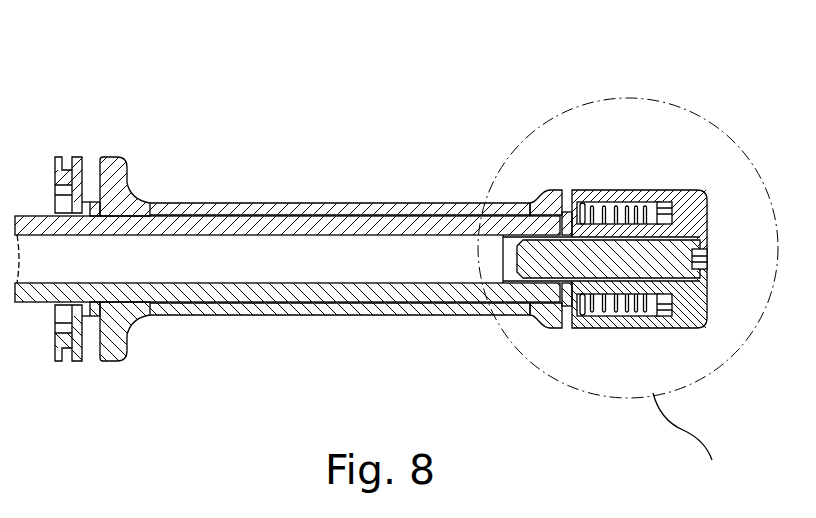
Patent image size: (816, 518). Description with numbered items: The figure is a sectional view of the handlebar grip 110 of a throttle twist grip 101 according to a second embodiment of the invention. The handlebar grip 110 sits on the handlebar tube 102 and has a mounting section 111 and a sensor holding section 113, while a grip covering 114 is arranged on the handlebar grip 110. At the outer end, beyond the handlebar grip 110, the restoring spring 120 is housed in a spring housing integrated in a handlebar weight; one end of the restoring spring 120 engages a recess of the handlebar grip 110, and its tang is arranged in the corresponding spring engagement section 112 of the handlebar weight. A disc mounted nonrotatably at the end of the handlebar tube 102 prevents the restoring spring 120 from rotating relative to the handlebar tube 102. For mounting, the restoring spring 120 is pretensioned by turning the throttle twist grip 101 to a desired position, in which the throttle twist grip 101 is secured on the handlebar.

The throttle twist grip 101 is at (396, 258).
The handlebar tube 102 is at (188, 296).
The handlebar grip 110 is at (450, 305).
The mounting section 111 is at (84, 168).
The spring engagement section 112 is at (567, 213).
The sensor holding section 113 is at (63, 340).
The grip covering 114 is at (340, 312).
The restoring spring 120 is at (630, 207).